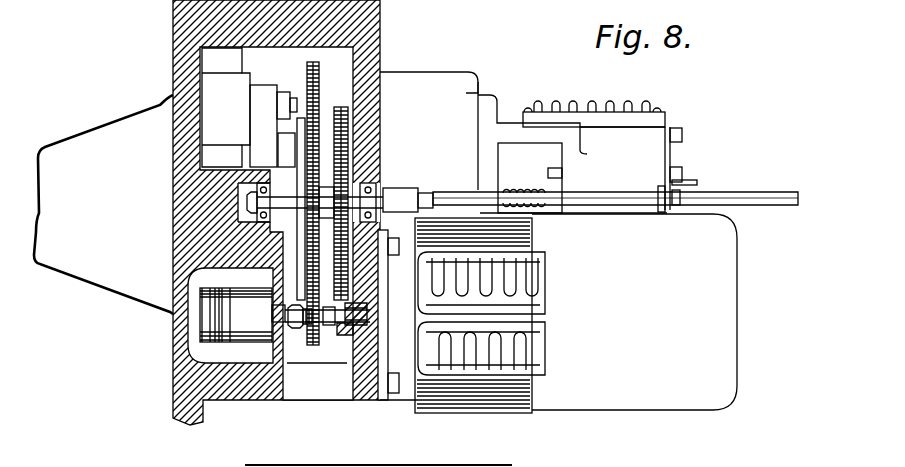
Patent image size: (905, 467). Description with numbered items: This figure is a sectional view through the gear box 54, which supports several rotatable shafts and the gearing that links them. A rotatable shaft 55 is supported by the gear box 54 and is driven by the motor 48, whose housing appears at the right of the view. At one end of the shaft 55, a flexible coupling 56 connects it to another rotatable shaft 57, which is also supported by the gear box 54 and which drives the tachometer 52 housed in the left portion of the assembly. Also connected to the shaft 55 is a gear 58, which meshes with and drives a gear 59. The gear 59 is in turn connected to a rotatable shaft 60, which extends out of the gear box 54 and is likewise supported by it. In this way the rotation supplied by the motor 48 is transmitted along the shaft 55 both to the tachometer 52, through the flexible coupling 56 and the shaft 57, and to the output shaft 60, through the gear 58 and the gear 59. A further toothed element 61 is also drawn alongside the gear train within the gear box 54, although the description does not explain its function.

The motor 48 is at (720, 337).
The tachometer 52 is at (233, 312).
The gear box 54 is at (463, 83).
The rotatable shaft 55 is at (367, 313).
The flexible coupling 56 is at (307, 328).
The rotatable shaft 57 is at (297, 327).
The gear 58 is at (338, 335).
The gear 59 is at (348, 137).
The rotatable shaft 60 is at (718, 192).
The gear 61 is at (327, 66).